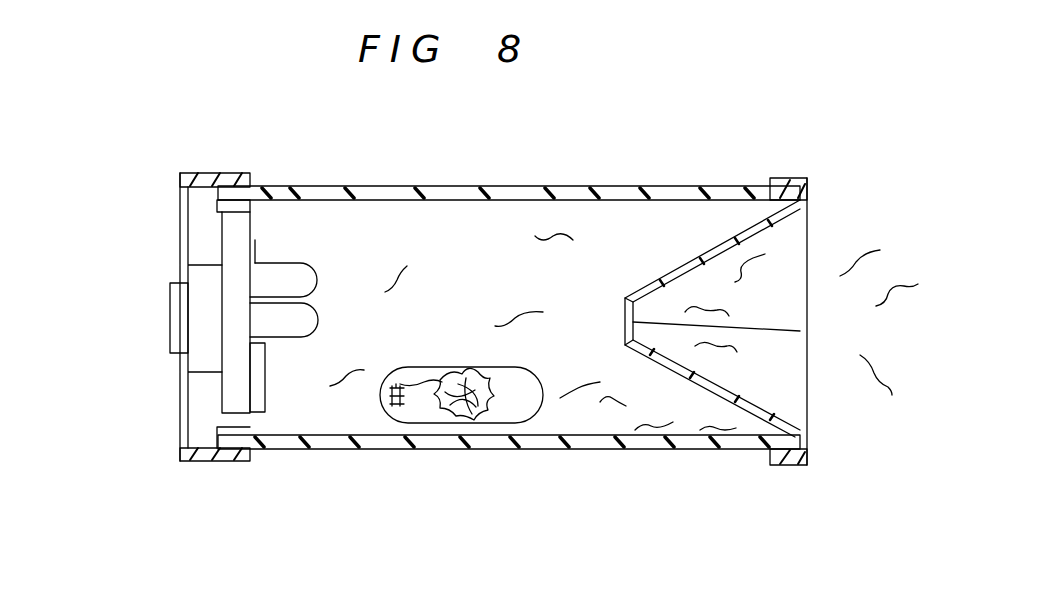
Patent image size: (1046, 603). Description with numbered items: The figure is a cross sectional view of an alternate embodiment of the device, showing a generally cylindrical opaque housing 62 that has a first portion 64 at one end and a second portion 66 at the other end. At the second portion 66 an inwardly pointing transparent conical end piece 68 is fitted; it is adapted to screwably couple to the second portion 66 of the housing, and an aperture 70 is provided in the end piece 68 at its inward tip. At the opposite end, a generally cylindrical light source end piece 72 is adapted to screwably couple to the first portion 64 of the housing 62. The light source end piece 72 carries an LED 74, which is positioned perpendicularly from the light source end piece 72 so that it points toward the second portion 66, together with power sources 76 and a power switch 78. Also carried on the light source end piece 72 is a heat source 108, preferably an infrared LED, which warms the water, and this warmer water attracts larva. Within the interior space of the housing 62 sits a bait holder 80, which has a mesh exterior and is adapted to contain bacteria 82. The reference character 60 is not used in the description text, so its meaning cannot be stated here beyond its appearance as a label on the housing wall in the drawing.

The tubular housing 60 is at (585, 185).
The opaque housing 62 is at (380, 178).
The first portion 64 is at (246, 175).
The second portion 66 is at (780, 178).
The transparent conical end piece 68 is at (795, 214).
The aperture 70 is at (800, 331).
The light source end piece 72 is at (204, 456).
The LED 74 is at (285, 298).
The power sources 76 is at (202, 316).
The power switch 78 is at (170, 300).
The bait holder 80 is at (525, 416).
The bacteria 82 is at (460, 420).
The heat source 108 is at (290, 314).